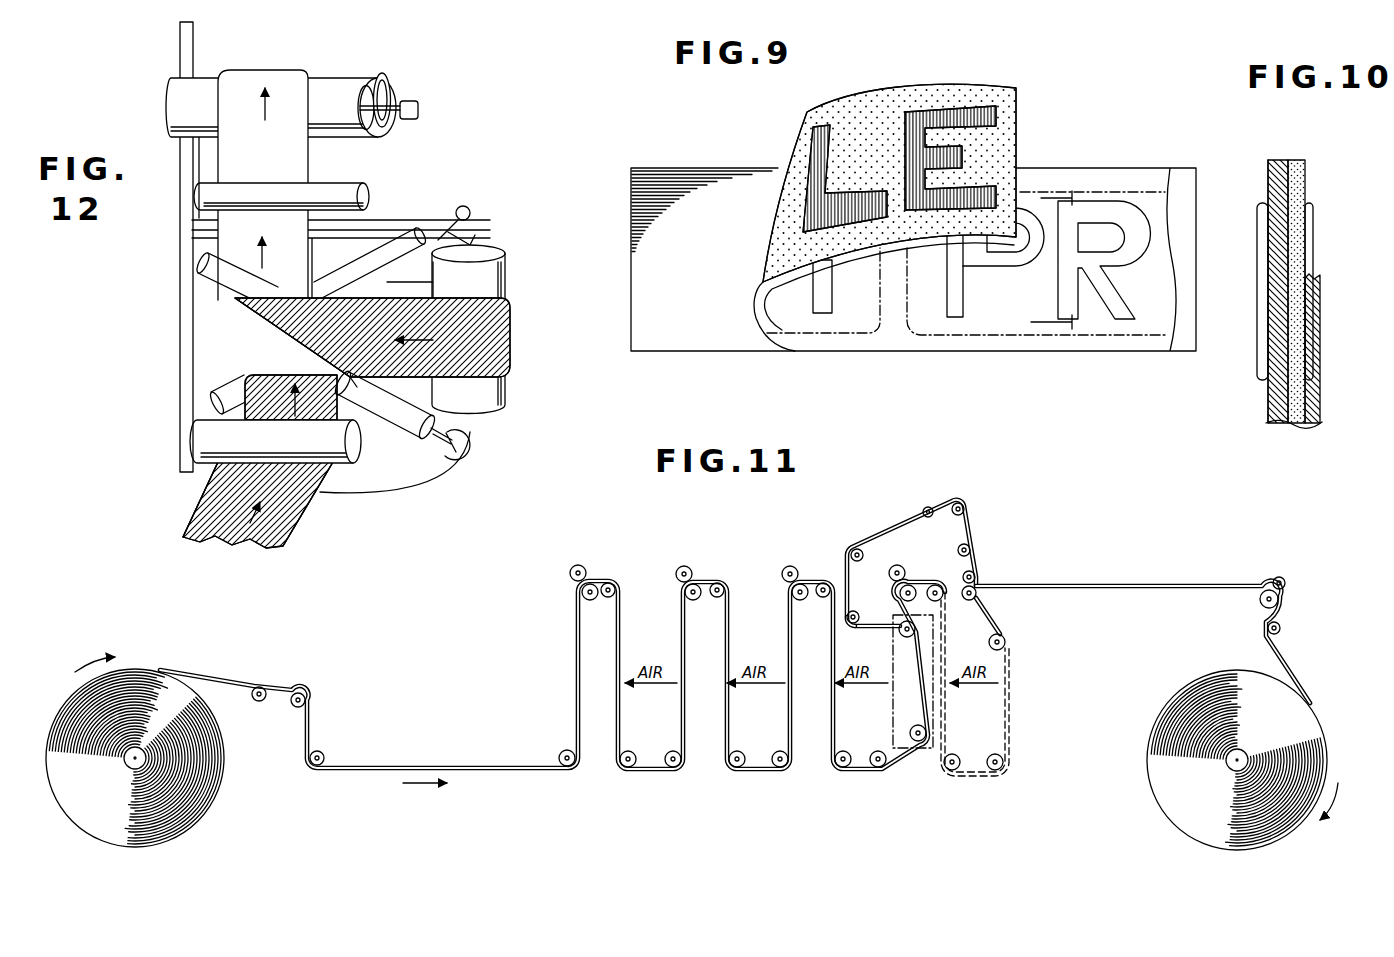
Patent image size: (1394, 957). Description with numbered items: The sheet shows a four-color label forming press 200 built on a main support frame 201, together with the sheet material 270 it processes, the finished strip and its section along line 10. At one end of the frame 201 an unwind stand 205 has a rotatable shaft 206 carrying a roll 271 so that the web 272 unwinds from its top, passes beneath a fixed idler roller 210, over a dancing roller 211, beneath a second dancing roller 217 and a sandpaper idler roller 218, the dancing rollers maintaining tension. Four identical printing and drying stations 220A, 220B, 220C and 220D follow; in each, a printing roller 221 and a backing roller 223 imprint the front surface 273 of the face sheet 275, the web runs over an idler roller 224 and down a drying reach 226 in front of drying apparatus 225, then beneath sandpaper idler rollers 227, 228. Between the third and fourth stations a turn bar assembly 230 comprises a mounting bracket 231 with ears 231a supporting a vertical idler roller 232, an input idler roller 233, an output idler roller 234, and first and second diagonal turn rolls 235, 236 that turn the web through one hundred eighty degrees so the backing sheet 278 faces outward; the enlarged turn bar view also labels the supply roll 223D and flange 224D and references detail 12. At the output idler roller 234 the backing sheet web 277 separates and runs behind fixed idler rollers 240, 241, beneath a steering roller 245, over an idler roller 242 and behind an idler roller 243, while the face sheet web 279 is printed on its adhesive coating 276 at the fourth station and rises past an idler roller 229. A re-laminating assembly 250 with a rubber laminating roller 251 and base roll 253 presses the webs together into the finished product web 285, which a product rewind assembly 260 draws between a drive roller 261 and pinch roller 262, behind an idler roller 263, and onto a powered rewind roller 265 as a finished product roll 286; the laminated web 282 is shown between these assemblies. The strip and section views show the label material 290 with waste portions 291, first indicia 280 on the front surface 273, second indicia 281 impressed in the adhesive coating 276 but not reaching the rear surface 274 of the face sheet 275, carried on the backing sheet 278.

In FIG. 11, the four-color label forming press 200 is at (478, 589).
In FIG. 12, the main support frame 201 is at (181, 358).
In FIG. 11, the unwind stand 205 is at (149, 783).
In FIG. 11, the rotatable shaft 206 is at (146, 752).
In FIG. 11, the fixed idler roller 210 is at (258, 685).
In FIG. 11, the dancing roller 211 is at (294, 708).
In FIG. 11, the dancing roller 217 is at (325, 754).
In FIG. 11, the sandpaper idler roller 218 is at (561, 755).
In FIG. 11, the printing and drying station 220A is at (620, 570).
In FIG. 11, the printing and drying station 220B is at (719, 565).
In FIG. 11, the printing and drying station 220C is at (815, 560).
In FIG. 11, the printing and drying station 220D is at (928, 575).
In FIG. 11, the printing roller 221 is at (572, 567).
In FIG. 11, the backing roller 223 is at (588, 600).
In FIG. 12, the supply roll 223D is at (171, 99).
In FIG. 11, the idler roller 224 is at (622, 605).
In FIG. 12, the roll flange 224D is at (371, 80).
In FIG. 11, the drying apparatus 225 is at (657, 652).
In FIG. 11, the drying reach 226 is at (621, 730).
In FIG. 11, the sandpaper idler roller 227 is at (637, 765).
In FIG. 11, the sandpaper idler roller 228 is at (668, 767).
In FIG. 11, the idler roller 229 is at (1007, 648).
In FIG. 12, the turn bar assembly 230 is at (460, 100).
In FIG. 11, the turn bar assembly 230 is at (892, 717).
In FIG. 12, the mounting bracket 231 is at (405, 220).
In FIG. 12, the lugs or ears 231a is at (478, 247).
In FIG. 12, the vertically extending idler roller 232 is at (507, 267).
In FIG. 12, the input idler roller 233 is at (217, 467).
In FIG. 11, the input idler roller 233 is at (910, 747).
In FIG. 12, the output idler roller 234 is at (372, 190).
In FIG. 11, the output idler roller 234 is at (899, 636).
In FIG. 12, the first diagonal turn roll 235 is at (383, 270).
In FIG. 12, the second diagonal turn roll 236 is at (400, 412).
In FIG. 11, the fixed idler roller 240 is at (873, 599).
In FIG. 11, the fixed idler roller 241 is at (862, 548).
In FIG. 11, the fixed idler roller 242 is at (965, 507).
In FIG. 11, the idler roller 243 is at (972, 548).
In FIG. 11, the steering roller 245 is at (930, 506).
In FIG. 11, the re-laminating assembly 250 is at (1048, 558).
In FIG. 11, the rubber laminating roller 251 is at (977, 578).
In FIG. 11, the laminating base roll 253 is at (978, 597).
In FIG. 11, the product rewind assembly 260 is at (1330, 620).
In FIG. 11, the web tension control drive roller 261 is at (1259, 605).
In FIG. 11, the web tension control pinch roller 262 is at (1284, 578).
In FIG. 11, the idler roller 263 is at (1281, 631).
In FIG. 11, the product rewind roller 265 is at (1244, 749).
In FIG. 10, the sheet material 270 is at (1263, 392).
In FIG. 11, the roll 271 is at (205, 803).
In FIG. 12, the web 272 is at (303, 527).
In FIG. 11, the web 272 is at (368, 772).
In FIG. 12, the front surface 273 is at (293, 494).
In FIG. 9, the front surface 273 is at (866, 292).
In FIG. 10, the front surface 273 is at (1267, 182).
In FIG. 10, the rear surface 274 is at (1300, 165).
In FIG. 10, the face sheet 275 is at (1278, 158).
In FIG. 11, the face sheet 275 is at (1007, 710).
In FIG. 12, the pressure-sensitive adhesive coating 276 is at (275, 161).
In FIG. 9, the pressure-sensitive adhesive coating 276 is at (885, 201).
In FIG. 10, the pressure-sensitive adhesive coating 276 is at (1293, 415).
In FIG. 11, the pressure-sensitive adhesive coating 276 is at (1003, 695).
In FIG. 11, the backing sheet web 277 is at (903, 530).
In FIG. 12, the backing sheet 278 is at (302, 276).
In FIG. 9, the backing sheet 278 is at (682, 168).
In FIG. 10, the backing sheet 278 is at (1313, 273).
In FIG. 11, the face sheet web 279 is at (1012, 735).
In FIG. 9, the first indicia 280 is at (972, 108).
In FIG. 10, the first indicia 280 is at (1260, 337).
In FIG. 9, the second indicia 281 is at (1061, 292).
In FIG. 10, the second indicia 281 is at (1306, 217).
In FIG. 11, the product web 282 is at (1128, 583).
In FIG. 9, the finished product web 285 is at (1096, 152).
In FIG. 11, the finished product roll 286 is at (1195, 840).
In FIG. 9, the label material 290 is at (825, 337).
In FIG. 9, the waste portions 291 is at (896, 328).
In FIG. 9, the section line 10 is at (1070, 262).
In FIG. 11, the detail region 12 is at (893, 735).